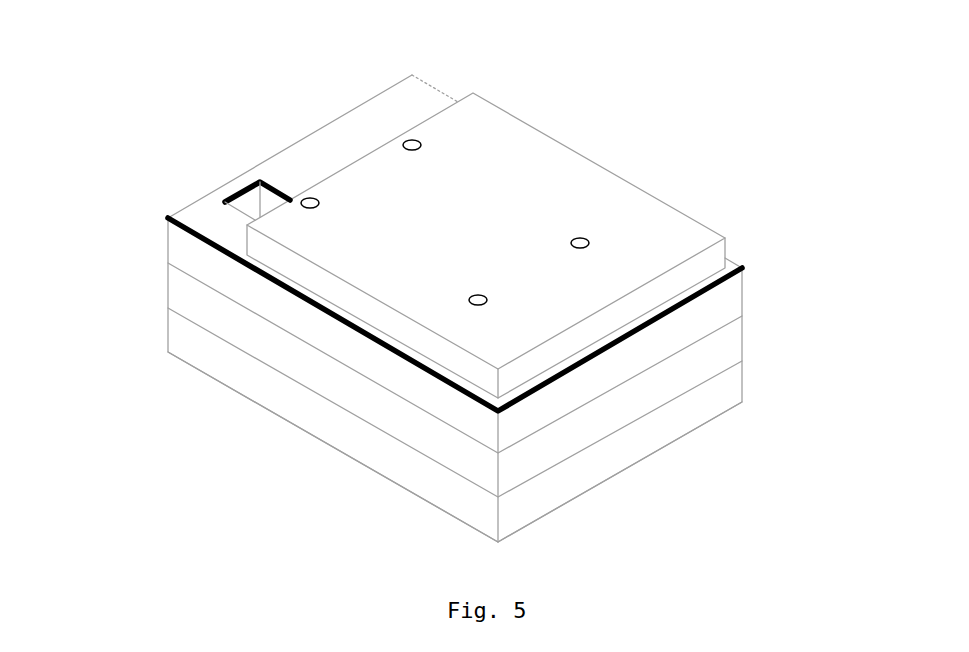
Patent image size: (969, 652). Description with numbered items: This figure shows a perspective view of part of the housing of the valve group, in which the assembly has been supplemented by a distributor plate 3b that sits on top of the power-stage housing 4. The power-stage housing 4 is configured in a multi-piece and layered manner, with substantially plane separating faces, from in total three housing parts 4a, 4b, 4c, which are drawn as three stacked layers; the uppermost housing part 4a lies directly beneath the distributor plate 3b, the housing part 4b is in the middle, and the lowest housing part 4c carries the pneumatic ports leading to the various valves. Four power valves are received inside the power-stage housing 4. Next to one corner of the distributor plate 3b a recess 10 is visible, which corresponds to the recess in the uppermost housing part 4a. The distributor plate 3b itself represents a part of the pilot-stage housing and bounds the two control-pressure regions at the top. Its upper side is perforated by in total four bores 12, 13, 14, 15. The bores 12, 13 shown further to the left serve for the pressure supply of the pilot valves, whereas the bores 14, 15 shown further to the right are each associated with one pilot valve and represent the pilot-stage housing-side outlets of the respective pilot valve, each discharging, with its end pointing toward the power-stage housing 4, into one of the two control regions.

The power-stage housing 4 is at (57, 266).
The uppermost housing part 4a is at (803, 302).
The housing part 4b is at (803, 343).
The lowest housing part 4c is at (798, 390).
The distributor plate 3b is at (674, 234).
The recess 10 is at (240, 190).
The bore 12 is at (312, 197).
The bore 13 is at (410, 138).
The bore 14 is at (478, 293).
The bore 15 is at (583, 236).